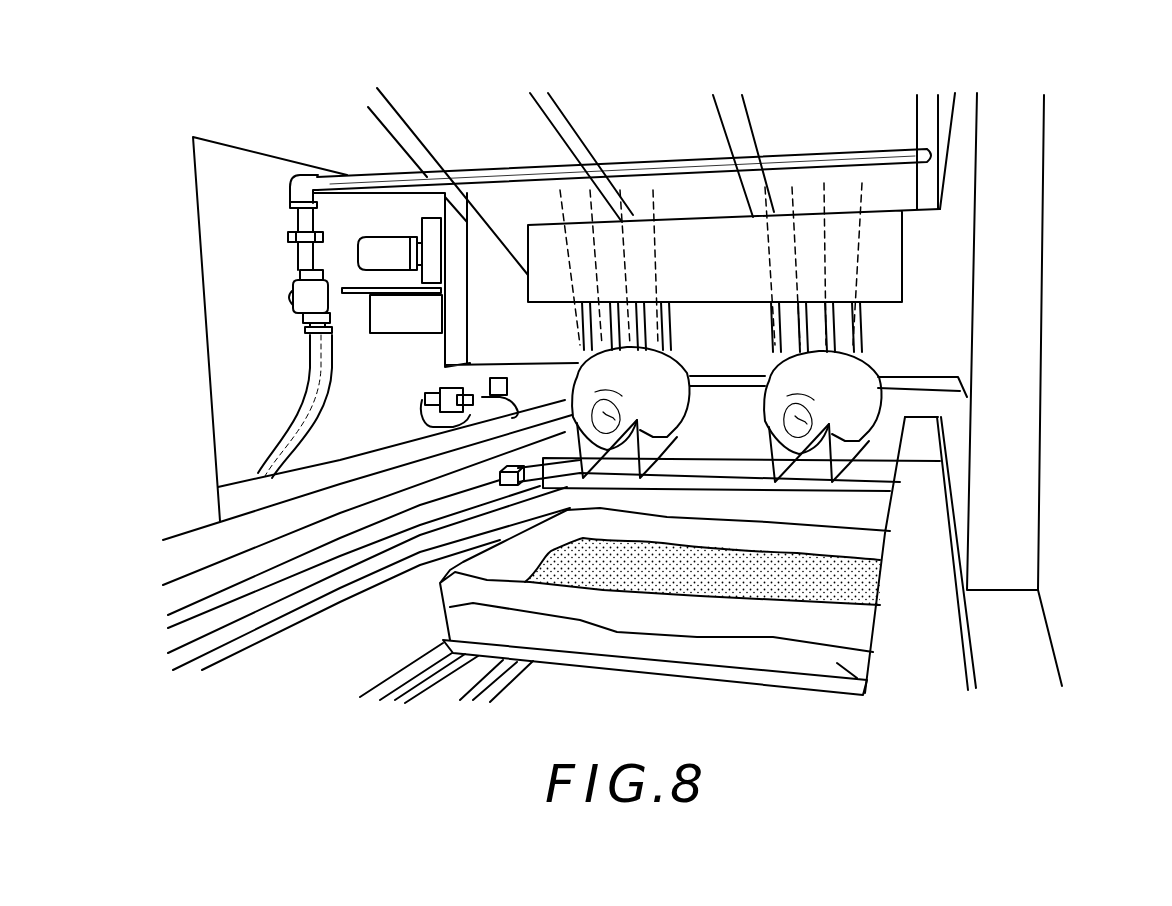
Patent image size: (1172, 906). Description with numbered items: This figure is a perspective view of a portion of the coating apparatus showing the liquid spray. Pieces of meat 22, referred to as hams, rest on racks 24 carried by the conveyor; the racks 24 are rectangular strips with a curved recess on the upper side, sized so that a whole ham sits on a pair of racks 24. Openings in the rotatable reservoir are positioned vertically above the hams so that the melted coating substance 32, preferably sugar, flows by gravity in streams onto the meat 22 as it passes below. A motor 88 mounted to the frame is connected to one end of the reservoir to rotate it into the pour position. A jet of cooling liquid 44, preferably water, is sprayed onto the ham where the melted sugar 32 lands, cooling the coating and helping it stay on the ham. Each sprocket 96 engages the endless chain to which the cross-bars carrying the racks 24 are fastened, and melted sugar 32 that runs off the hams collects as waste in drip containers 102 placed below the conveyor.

The piece of meat 22 is at (667, 377).
The racks 24 is at (853, 448).
The coating substance 32 is at (857, 327).
The jet of cooling liquid 44 is at (653, 204).
The motor 88 is at (388, 233).
The sprocket 96 is at (850, 487).
The drip containers 102 is at (850, 690).